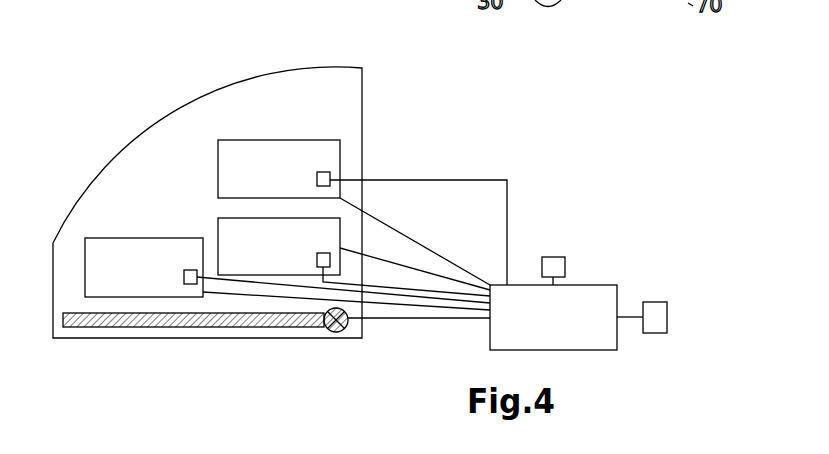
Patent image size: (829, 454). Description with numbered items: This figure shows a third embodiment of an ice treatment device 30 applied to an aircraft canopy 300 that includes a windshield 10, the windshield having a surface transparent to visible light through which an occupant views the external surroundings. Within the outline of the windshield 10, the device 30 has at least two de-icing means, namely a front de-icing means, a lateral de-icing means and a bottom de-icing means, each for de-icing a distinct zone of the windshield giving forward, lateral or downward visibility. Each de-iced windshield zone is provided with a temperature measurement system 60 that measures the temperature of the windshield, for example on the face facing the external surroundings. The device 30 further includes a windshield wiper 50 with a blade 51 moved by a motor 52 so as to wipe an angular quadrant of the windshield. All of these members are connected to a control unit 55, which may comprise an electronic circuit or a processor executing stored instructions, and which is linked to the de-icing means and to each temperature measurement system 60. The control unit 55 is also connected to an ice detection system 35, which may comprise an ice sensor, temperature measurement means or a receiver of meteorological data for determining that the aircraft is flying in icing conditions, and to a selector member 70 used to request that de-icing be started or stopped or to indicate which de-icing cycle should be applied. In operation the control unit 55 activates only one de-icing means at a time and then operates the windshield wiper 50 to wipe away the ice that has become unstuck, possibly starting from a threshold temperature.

The canopy 300 is at (124, 116).
The windshield 10 is at (343, 77).
The temperature measurement system 60 is at (184, 272).
The windshield wiper 50 is at (143, 327).
The blade 51 is at (222, 323).
The motor 52 is at (330, 332).
The ice treatment device 30 is at (534, 217).
The control unit 55 is at (617, 350).
The ice detection system 35 is at (566, 267).
The selector member 70 is at (657, 302).